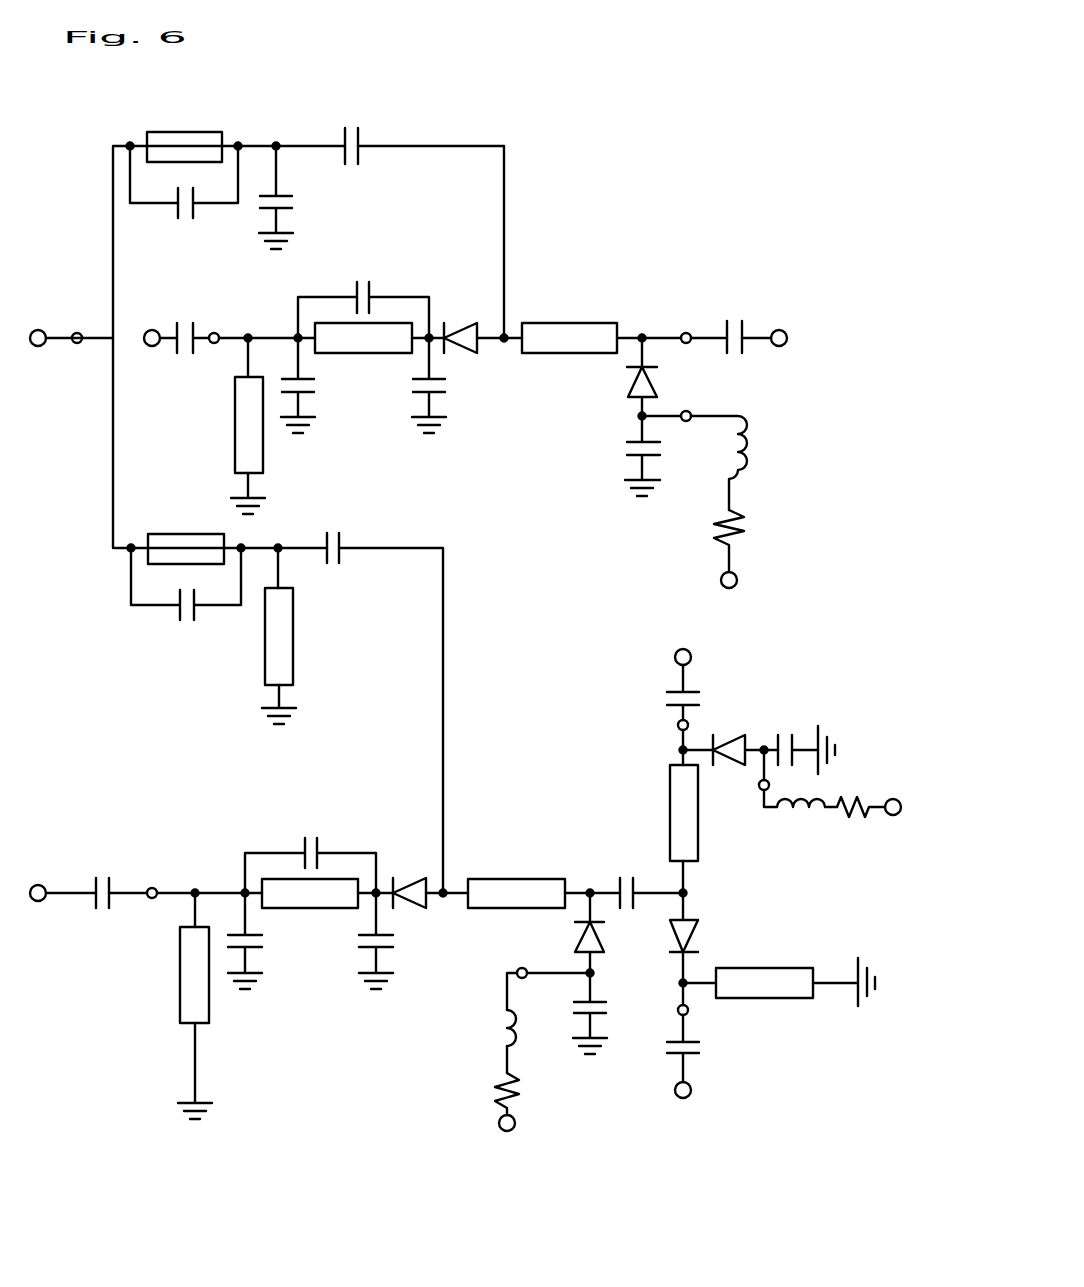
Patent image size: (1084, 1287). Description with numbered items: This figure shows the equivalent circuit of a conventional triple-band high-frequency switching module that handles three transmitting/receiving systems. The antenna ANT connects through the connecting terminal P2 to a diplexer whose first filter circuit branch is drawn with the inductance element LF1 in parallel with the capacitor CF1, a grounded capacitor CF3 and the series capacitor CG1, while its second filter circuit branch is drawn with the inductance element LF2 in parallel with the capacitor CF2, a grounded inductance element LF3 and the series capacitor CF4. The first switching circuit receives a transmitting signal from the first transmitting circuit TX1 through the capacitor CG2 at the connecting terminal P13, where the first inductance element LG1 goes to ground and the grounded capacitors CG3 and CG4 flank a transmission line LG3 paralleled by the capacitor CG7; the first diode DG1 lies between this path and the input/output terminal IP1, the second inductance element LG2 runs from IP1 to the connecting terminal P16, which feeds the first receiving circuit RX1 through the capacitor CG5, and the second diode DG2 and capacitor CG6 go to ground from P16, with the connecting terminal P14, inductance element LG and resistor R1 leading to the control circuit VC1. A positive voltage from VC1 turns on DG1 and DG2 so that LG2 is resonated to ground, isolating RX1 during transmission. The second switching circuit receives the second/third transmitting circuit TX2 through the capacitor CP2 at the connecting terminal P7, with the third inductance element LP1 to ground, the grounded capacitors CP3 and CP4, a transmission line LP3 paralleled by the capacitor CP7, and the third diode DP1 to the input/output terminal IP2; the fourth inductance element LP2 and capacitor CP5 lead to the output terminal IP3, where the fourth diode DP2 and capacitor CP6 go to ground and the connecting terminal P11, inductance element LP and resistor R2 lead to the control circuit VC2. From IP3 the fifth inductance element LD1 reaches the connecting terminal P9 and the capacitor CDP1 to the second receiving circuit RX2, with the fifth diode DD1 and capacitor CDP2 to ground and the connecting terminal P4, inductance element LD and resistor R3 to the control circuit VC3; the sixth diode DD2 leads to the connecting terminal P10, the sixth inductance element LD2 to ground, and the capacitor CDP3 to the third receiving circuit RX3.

The antenna ANT is at (32, 350).
The connecting terminal P2 is at (77, 327).
The inductance element of first filter circuit LF1 is at (184, 147).
The capacitor of first filter circuit CF1 is at (184, 194).
The grounded capacitor of first filter circuit CF3 is at (294, 197).
The capacitor CG1 is at (351, 135).
The first transmitting circuit TX1 is at (152, 348).
The capacitor CG2 is at (185, 330).
The connecting terminal P13 is at (222, 327).
The first inductance element LG1 is at (248, 426).
The capacitor CG3 is at (316, 385).
The capacitor CG7 is at (363, 298).
The transmission line LG3 is at (363, 338).
The capacitor CG4 is at (447, 385).
The first diode DG1 is at (460, 327).
The input/output terminal IP1 is at (504, 338).
The second inductance element LG2 is at (569, 338).
The connecting terminal P16 is at (686, 325).
The capacitor CG5 is at (735, 348).
The first receiving circuit RX1 is at (781, 326).
The second diode DG2 is at (622, 377).
The capacitor CG6 is at (624, 455).
The connecting terminal P14 is at (671, 405).
The inductance element LG is at (733, 463).
The resistor R1 is at (743, 541).
The control circuit VC1 is at (747, 584).
The inductance element of second filter circuit LF2 is at (186, 549).
The capacitor of second filter circuit CF2 is at (186, 596).
The grounded inductance element of second filter circuit LF3 is at (279, 636).
The capacitor CF4 is at (334, 563).
The second/third transmitting circuit TX2 is at (35, 905).
The capacitor CP2 is at (102, 885).
The connecting terminal P7 is at (153, 883).
The third inductance element LP1 is at (195, 1006).
The capacitor CP3 is at (262, 941).
The capacitor CP7 is at (310, 854).
The transmission line LP3 is at (310, 893).
The capacitor CP4 is at (393, 941).
The third diode DP1 is at (410, 882).
The input/output terminal IP2 is at (443, 893).
The fourth inductance element LP2 is at (516, 893).
The capacitor CP5 is at (627, 881).
The fourth diode DP2 is at (572, 933).
The capacitor CP6 is at (575, 1012).
The connecting terminal P11 is at (548, 962).
The inductance element LP is at (496, 1023).
The resistor R2 is at (496, 1094).
The control circuit VC2 is at (507, 1135).
The second receiving circuit RX2 is at (683, 645).
The capacitor CDP1 is at (667, 700).
The connecting terminal P9 is at (672, 725).
The fifth inductance element LD1 is at (684, 811).
The fifth diode DD1 is at (730, 738).
The capacitor CDP2 is at (787, 735).
The connecting terminal P4 is at (753, 772).
The inductance element LD is at (800, 817).
The resistor R3 is at (861, 821).
The control circuit VC3 is at (902, 817).
The output terminal IP3 is at (683, 893).
The sixth diode DD2 is at (704, 938).
The sixth inductance element LD2 is at (778, 982).
The connecting terminal P10 is at (668, 1001).
The capacitor CDP3 is at (706, 1048).
The third receiving circuit RX3 is at (683, 1102).